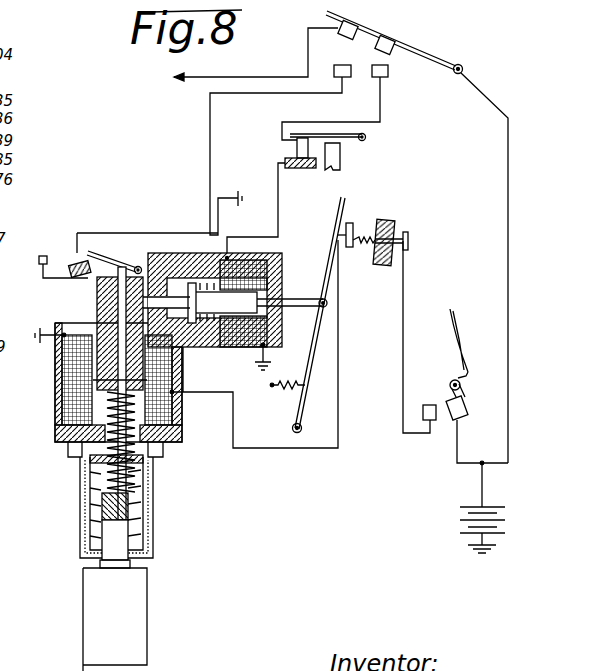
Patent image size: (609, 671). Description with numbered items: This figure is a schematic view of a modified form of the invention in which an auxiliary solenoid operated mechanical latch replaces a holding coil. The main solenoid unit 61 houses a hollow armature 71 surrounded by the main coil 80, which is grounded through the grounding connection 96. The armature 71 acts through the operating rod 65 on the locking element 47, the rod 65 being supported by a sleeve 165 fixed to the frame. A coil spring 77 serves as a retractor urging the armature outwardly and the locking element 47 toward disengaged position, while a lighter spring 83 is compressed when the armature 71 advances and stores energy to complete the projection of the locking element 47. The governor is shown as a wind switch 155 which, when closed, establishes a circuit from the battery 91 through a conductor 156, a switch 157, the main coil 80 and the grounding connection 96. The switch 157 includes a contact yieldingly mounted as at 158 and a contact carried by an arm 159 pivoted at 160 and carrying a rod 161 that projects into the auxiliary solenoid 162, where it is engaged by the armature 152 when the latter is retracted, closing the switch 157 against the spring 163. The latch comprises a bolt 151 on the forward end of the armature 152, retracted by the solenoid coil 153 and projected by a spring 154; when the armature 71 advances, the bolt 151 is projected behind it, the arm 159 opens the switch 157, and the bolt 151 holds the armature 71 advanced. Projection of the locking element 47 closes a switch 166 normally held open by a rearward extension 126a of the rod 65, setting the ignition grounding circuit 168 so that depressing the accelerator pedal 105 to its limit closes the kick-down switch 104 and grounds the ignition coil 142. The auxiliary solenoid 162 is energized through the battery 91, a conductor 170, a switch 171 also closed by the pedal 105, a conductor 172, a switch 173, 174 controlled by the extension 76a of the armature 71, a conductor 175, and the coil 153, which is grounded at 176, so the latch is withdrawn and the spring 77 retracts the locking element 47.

The kick-down switch 104 is at (343, 53).
The accelerator pedal 105 is at (424, 46).
The ignition coil 142 is at (235, 57).
The conductor 170 is at (508, 156).
The switch 171 is at (383, 62).
The conductor 172 is at (382, 112).
The ignition grounding circuit 168 is at (210, 141).
The switch 173 is at (297, 133).
The switch 174 is at (297, 151).
The conductor 175 is at (278, 178).
The extension of the armature 76a is at (340, 156).
The switch 166 is at (110, 233).
The bolt 151 is at (97, 295).
The spring 154 is at (198, 250).
The armature 152 is at (200, 303).
The solenoid coil 153 is at (243, 352).
The spring 163 is at (278, 361).
The ground 176 is at (257, 378).
The arm 159 is at (341, 205).
The pivot 160 is at (300, 432).
The rod 161 is at (303, 305).
The auxiliary solenoid 162 is at (283, 256).
The yielding contact mounting 158 is at (385, 223).
The switch 157 is at (372, 226).
The conductor 156 is at (404, 292).
The wind switch 155 is at (460, 322).
The battery 91 is at (460, 527).
The solenoid unit 61 is at (54, 428).
The grounding connection 96 is at (63, 368).
The main coil 80 is at (180, 422).
The armature 71 is at (100, 318).
The rearward extension of the push rod 126a is at (97, 375).
The spring 83 is at (128, 480).
The sleeve 165 is at (80, 514).
The coil spring 77 is at (130, 540).
The operating rod 65 is at (132, 562).
The locking element 47 is at (140, 593).